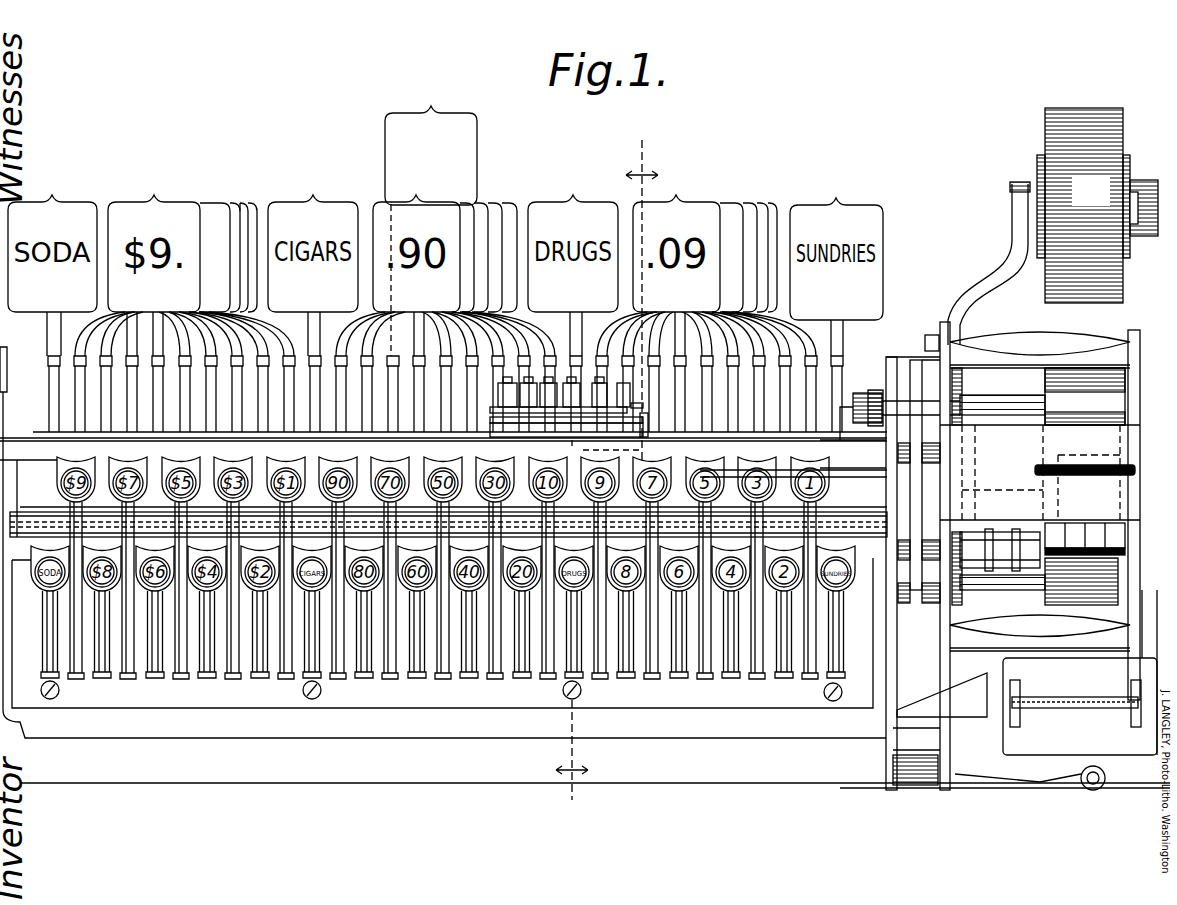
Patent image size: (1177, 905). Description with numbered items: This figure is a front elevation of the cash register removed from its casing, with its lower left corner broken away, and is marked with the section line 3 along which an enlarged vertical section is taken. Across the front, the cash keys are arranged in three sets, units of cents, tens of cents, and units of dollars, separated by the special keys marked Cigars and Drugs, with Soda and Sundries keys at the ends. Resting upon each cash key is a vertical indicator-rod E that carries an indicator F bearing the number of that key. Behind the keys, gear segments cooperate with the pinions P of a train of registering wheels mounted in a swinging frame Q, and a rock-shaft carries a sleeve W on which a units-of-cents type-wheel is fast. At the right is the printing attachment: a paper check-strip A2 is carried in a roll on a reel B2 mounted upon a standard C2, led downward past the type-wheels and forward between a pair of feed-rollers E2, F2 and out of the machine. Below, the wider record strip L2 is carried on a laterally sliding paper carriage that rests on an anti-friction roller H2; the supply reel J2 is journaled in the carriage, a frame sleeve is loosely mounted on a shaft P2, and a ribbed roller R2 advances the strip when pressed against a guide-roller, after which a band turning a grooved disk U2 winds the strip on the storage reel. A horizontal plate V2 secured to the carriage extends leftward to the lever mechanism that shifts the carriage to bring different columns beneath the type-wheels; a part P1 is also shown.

The indicator-rod E is at (48, 400).
The indicator F is at (478, 158).
The pinions of registering wheels P is at (638, 388).
The swinging frame Q is at (636, 422).
The counter part P1 is at (574, 451).
The shaft P2 is at (611, 452).
The sleeve W is at (870, 512).
The section line 3 is at (607, 470).
The paper check-strip A2 is at (1083, 205).
The reel B2 is at (1144, 180).
The standard C2 is at (986, 280).
The feed-roller E2 is at (1040, 378).
The feed-roller F2 is at (1128, 533).
The ribbed roller R2 is at (988, 540).
The grooved disk U2 is at (1155, 660).
The supply reel J2 is at (1062, 700).
The horizontal plate V2 is at (966, 694).
The record strip L2 is at (918, 755).
The anti-friction roller H2 is at (1108, 778).